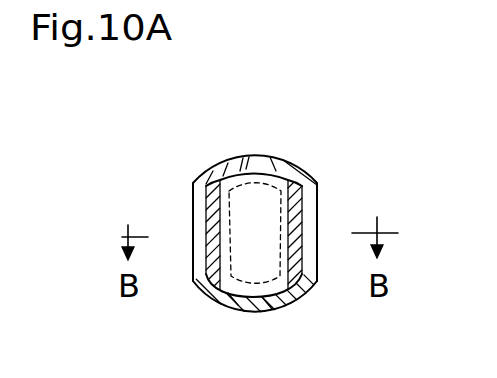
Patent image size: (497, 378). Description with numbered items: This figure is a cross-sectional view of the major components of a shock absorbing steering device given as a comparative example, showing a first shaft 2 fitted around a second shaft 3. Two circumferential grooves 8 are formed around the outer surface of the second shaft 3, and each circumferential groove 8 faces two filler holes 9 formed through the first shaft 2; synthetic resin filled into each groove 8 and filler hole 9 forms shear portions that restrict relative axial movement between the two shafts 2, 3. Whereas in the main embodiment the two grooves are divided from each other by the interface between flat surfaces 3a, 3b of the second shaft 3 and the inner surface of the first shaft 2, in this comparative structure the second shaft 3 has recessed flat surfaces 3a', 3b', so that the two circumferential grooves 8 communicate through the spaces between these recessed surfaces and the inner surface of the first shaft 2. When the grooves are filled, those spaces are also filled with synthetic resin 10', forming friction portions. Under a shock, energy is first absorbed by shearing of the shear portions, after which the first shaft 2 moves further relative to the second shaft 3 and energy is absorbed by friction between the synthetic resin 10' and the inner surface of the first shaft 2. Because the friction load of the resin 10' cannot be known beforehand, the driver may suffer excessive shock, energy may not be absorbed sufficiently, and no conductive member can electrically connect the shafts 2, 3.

The first shaft 2 is at (288, 173).
The second shaft 3 is at (255, 221).
The flat surface 3a is at (373, 233).
The flat surface 3b is at (133, 235).
The recessed flat surface 3a' is at (307, 312).
The recessed flat surface 3b' is at (201, 305).
The circumferential groove 8 is at (229, 298).
The filler hole 9 is at (268, 298).
The synthetic resin (friction portion) 10' is at (315, 218).